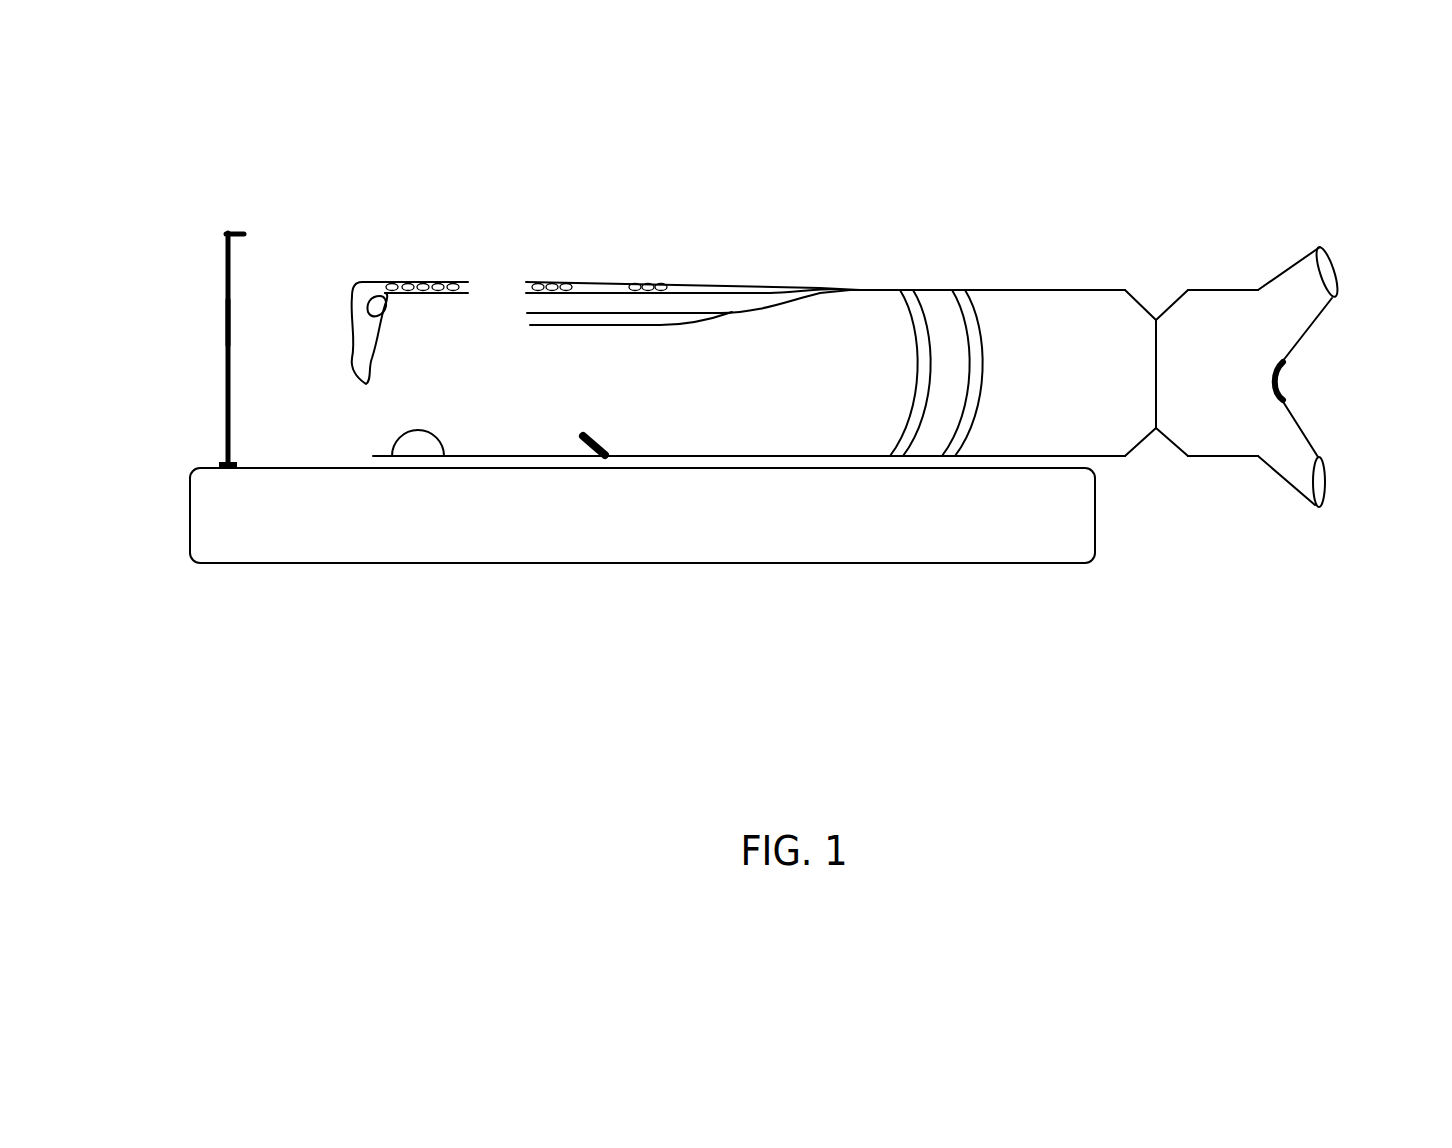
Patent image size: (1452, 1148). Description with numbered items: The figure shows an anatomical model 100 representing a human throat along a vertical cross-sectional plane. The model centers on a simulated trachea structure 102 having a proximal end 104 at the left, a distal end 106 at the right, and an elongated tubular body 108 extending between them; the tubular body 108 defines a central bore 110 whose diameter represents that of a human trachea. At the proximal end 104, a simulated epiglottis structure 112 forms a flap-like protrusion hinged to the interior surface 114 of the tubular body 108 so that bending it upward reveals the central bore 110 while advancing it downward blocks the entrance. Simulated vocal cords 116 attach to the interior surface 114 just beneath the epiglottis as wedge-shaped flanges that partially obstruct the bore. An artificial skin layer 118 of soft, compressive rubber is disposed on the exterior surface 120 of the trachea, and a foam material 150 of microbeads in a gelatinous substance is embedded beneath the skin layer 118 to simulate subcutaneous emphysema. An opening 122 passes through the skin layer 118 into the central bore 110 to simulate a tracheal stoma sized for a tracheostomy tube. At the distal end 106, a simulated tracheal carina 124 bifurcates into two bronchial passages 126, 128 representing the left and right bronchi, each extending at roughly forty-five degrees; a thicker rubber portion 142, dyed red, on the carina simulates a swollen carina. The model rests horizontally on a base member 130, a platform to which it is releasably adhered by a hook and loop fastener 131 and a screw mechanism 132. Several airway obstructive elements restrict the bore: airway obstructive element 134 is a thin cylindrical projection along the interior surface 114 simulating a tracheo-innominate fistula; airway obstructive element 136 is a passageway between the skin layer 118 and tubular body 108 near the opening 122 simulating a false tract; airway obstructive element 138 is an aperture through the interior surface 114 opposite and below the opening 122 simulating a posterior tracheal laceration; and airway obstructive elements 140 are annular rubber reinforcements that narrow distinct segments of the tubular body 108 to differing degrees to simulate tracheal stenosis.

The anatomical model 100 is at (1328, 188).
The simulated trachea structure 102 is at (431, 238).
The proximal end 104 is at (378, 281).
The distal end 106 is at (1156, 320).
The elongated tubular body 108 is at (1017, 278).
The central bore 110 is at (347, 393).
The simulated epiglottis structure 112 is at (363, 333).
The interior surface 114 is at (460, 455).
The simulated vocal cords 116 is at (393, 447).
The artificial skin layer 118 is at (627, 286).
The exterior surface 120 is at (723, 315).
The opening 122 is at (505, 284).
The simulated tracheal carina 124 is at (1206, 392).
The bronchial passage 126 is at (1310, 325).
The bronchial passage 128 is at (1305, 430).
The base member 130 is at (666, 541).
The hook and loop fastener 131 is at (236, 232).
The screw mechanism 132 is at (227, 324).
The airway obstructive element 134 is at (678, 327).
The airway obstructive element 136 is at (683, 298).
The airway obstructive element 138 is at (591, 433).
The airway obstructive element 140 is at (960, 290).
The thicker rubber portion 142 is at (1283, 382).
The foam material 150 is at (453, 287).